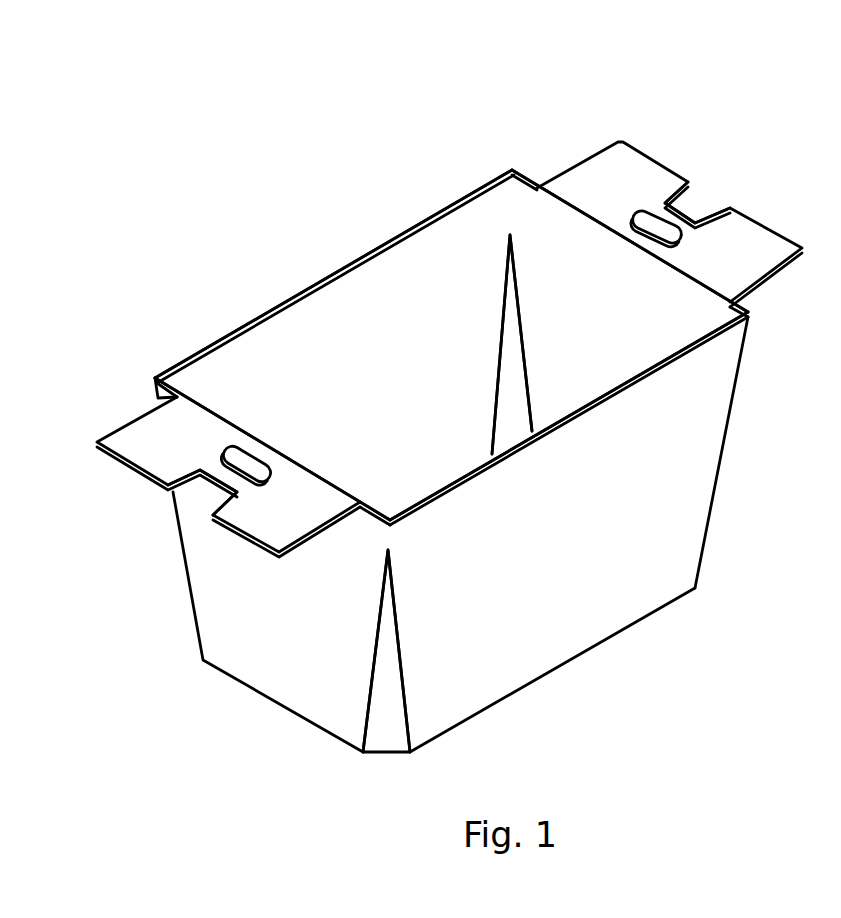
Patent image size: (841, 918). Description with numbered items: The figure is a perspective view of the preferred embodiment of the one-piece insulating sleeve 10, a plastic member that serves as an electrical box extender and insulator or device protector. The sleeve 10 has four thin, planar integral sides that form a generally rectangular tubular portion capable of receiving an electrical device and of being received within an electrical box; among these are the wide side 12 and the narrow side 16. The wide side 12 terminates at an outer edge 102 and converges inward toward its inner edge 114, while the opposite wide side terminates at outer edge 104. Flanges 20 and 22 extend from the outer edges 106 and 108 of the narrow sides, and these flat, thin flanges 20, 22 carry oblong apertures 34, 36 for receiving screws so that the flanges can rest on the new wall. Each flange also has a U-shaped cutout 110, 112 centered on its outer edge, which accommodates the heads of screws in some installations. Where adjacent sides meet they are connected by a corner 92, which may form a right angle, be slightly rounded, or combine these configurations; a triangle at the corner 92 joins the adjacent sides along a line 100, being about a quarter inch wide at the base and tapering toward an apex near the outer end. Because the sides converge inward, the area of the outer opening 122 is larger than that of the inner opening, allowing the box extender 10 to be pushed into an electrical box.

The one-piece insulating sleeve 10 is at (263, 125).
The wide side 12 is at (548, 532).
The narrow side 16 is at (266, 615).
The flange 20 is at (273, 525).
The flange 22 is at (716, 260).
The aperture 34 is at (228, 445).
The aperture 36 is at (655, 228).
The corner 92 is at (498, 422).
The line 100 is at (500, 340).
The outer edge 102 is at (570, 417).
The outer edge 104 is at (300, 295).
The outer edge 106 is at (195, 400).
The outer edge 108 is at (578, 215).
The U-shaped cutout 110 is at (200, 478).
The U-shaped cutout 112 is at (690, 190).
The inner edge 114 is at (552, 672).
The outer opening 122 is at (413, 367).